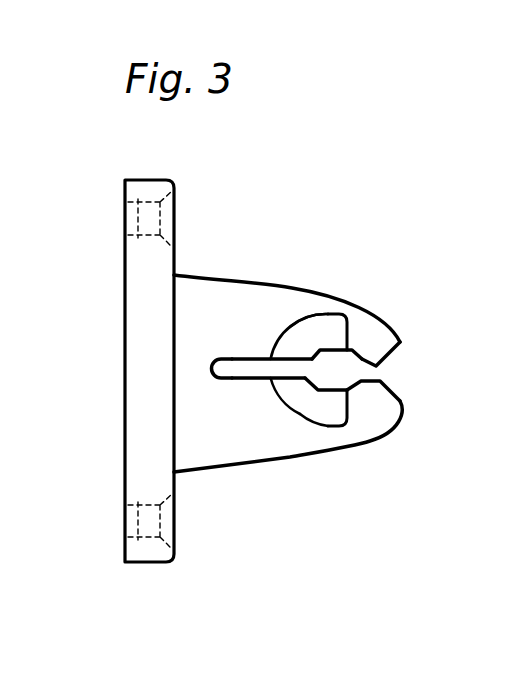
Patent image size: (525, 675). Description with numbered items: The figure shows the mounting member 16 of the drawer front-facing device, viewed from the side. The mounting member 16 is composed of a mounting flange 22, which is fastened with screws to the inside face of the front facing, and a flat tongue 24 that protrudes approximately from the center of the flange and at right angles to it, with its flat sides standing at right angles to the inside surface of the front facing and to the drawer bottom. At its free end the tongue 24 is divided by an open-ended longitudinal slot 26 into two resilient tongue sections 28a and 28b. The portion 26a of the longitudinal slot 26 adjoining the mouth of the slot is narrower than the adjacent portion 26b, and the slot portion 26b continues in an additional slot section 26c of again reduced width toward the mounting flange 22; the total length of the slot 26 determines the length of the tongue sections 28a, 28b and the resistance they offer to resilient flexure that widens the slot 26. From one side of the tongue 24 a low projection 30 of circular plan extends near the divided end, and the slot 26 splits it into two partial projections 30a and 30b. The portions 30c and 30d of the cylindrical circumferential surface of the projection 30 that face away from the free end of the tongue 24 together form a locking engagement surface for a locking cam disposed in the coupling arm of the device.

The mounting member 16 is at (220, 237).
The mounting flange 22 is at (145, 372).
The flat tongue 24 is at (292, 443).
The longitudinal slot 26 is at (361, 281).
The slot portion adjoining the mouth 26a is at (378, 369).
The adjacent slot portion 26b is at (325, 358).
The additional slot section 26c is at (230, 358).
The resilient tongue section 28a is at (371, 414).
The resilient tongue section 28b is at (371, 320).
The low projection 30 is at (341, 338).
The partial projection 30a is at (321, 413).
The partial projection 30b is at (301, 343).
The portion of the cylindrical circumferential surface 30c is at (279, 396).
The portion of the cylindrical circumferential surface 30d is at (292, 337).